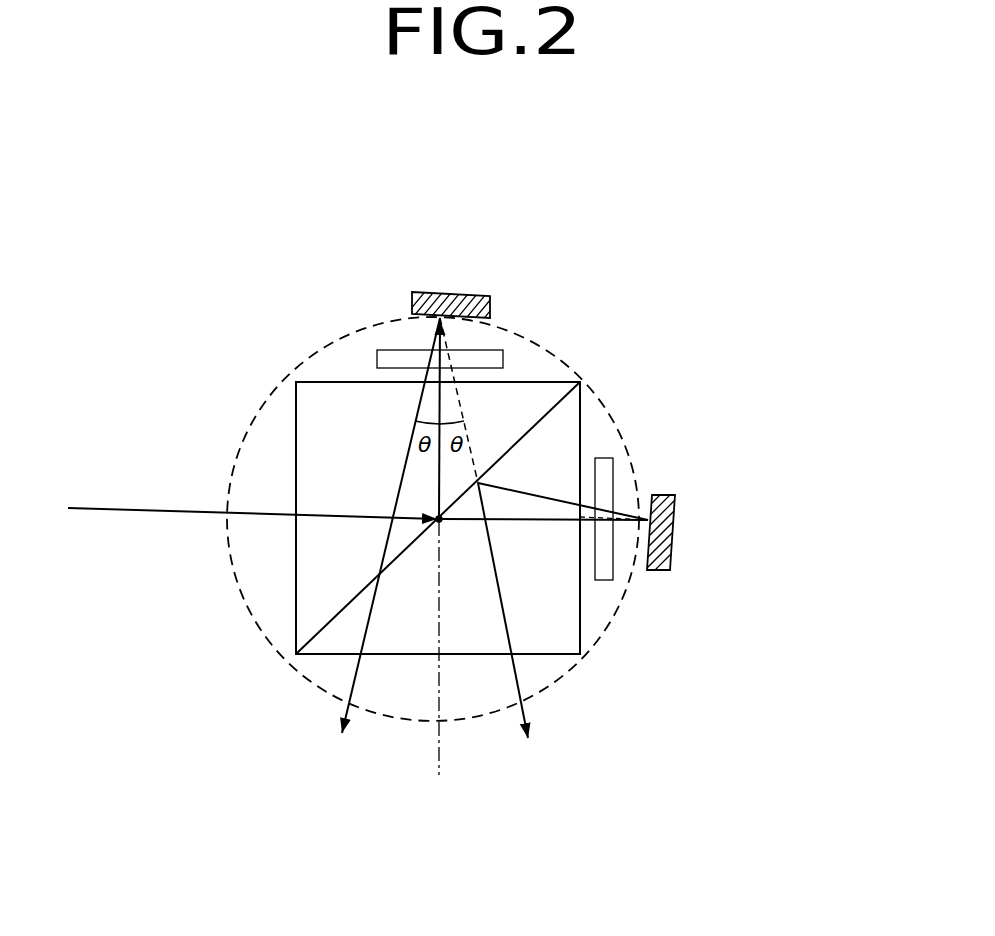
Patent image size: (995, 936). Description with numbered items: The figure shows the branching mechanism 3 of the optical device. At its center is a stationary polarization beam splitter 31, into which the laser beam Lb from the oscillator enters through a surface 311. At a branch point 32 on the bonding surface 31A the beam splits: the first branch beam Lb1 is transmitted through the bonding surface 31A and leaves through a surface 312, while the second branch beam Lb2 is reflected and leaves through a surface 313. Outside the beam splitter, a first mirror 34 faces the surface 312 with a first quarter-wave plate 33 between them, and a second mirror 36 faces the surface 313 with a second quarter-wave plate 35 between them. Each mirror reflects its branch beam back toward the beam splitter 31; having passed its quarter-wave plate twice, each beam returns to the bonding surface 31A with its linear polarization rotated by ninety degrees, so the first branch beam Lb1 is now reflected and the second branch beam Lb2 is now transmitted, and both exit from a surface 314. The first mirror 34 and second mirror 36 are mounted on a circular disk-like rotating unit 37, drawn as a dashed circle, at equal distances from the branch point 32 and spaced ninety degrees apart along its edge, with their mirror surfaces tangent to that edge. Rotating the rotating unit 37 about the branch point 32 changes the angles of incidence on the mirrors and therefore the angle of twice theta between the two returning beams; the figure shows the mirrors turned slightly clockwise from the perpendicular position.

The branching mechanism 3 is at (687, 338).
The beam splitter 31 is at (292, 553).
The surface 311 is at (295, 525).
The surface 312 is at (580, 643).
The surface 313 is at (558, 382).
The surface 314 is at (467, 654).
The bonding surface 31A is at (350, 600).
The branch point 32 is at (439, 522).
The first quarter-wave plate 33 is at (614, 470).
The first mirror 34 is at (677, 507).
The second quarter-wave plate 35 is at (503, 360).
The second mirror 36 is at (465, 294).
The rotating unit 37 is at (632, 432).
The laser beam Lb is at (87, 510).
The first branch beam Lb1 is at (540, 522).
The second branch beam Lb2 is at (439, 493).